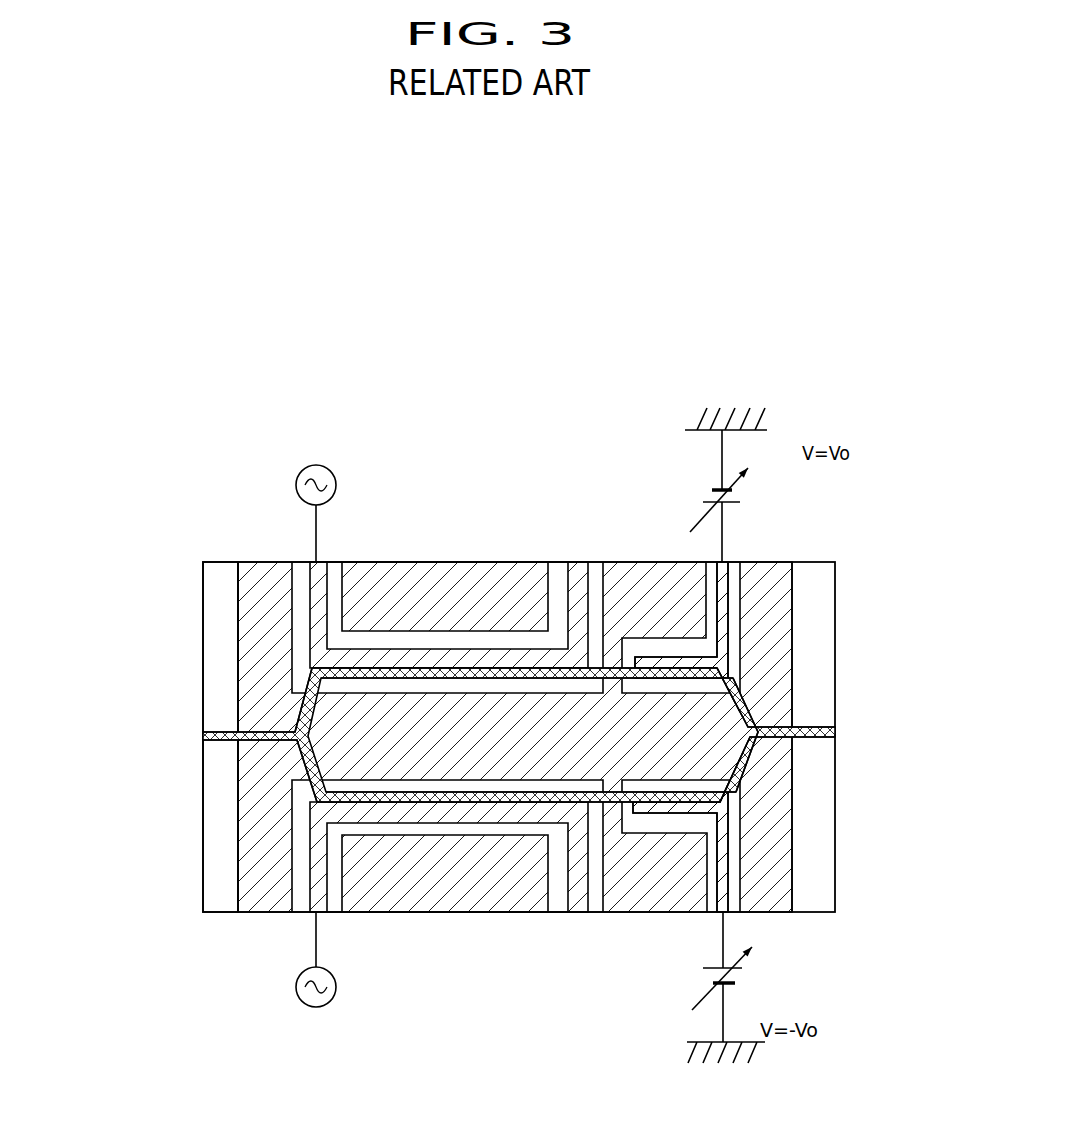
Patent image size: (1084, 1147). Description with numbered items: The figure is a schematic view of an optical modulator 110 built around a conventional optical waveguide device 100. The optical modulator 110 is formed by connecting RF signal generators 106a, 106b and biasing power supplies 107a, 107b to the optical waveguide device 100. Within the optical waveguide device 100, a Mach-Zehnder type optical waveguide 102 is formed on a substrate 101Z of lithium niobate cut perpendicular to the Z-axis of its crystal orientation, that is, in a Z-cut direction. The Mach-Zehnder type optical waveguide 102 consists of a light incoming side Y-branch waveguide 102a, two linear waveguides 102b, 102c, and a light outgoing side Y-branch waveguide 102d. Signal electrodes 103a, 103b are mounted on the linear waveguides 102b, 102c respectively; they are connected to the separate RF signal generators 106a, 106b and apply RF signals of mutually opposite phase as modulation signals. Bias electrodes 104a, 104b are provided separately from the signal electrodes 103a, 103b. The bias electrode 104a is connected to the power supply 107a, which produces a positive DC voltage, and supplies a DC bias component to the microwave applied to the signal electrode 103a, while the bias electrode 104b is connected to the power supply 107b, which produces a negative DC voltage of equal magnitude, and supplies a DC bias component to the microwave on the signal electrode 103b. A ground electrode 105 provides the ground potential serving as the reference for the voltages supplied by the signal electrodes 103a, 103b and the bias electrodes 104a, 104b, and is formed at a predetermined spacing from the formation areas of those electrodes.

The optical waveguide device 100 is at (200, 607).
The substrate 101Z is at (213, 897).
The Mach-Zehnder type optical waveguide 102 is at (745, 722).
The light incoming side Y-branch waveguide 102a is at (233, 745).
The linear waveguide 102b is at (440, 668).
The linear waveguide 102c is at (367, 808).
The light outgoing side Y-branch waveguide 102d is at (782, 727).
The signal electrode 103a is at (327, 563).
The signal electrode 103b is at (445, 804).
The bias electrode 104a is at (678, 666).
The bias electrode 104b is at (713, 865).
The ground electrode 105 is at (515, 563).
The RF signal generator 106a is at (313, 465).
The RF signal generator 106b is at (316, 1007).
The biasing power supply 107a is at (733, 503).
The biasing power supply 107b is at (733, 983).
The optical modulator 110 is at (170, 542).